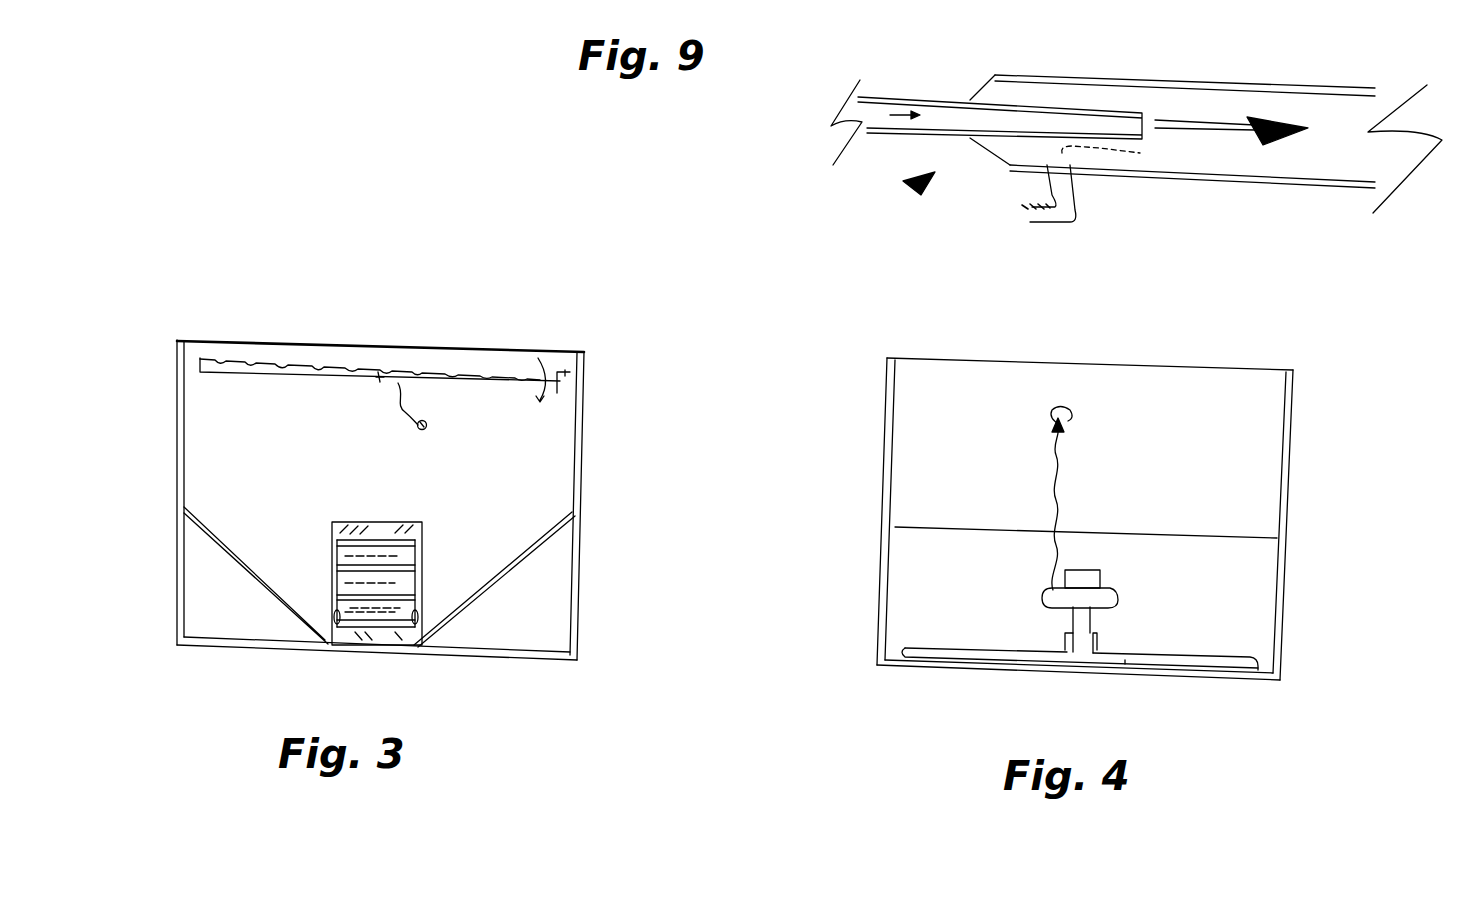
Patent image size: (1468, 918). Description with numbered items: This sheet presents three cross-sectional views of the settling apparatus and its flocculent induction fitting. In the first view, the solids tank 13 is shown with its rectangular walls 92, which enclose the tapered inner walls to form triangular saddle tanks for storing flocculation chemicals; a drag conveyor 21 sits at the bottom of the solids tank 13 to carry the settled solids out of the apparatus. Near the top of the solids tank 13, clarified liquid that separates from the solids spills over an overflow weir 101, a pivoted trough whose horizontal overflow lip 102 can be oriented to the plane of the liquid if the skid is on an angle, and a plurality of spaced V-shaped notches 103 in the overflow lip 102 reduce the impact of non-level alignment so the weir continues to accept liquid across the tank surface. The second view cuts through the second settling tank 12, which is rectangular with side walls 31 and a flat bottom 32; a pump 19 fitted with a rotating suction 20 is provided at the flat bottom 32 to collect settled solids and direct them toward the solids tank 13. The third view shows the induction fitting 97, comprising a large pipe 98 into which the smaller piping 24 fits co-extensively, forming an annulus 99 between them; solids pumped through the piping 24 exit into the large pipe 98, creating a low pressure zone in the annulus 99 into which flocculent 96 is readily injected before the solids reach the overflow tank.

In FIG. 3, the second settling tank 12 is at (582, 578).
In FIG. 3, the solids tank 13 is at (510, 428).
In FIG. 4, the pump 19 is at (1115, 605).
In FIG. 4, the rotating suction 20 is at (1183, 650).
In FIG. 3, the drag conveyor 21 is at (423, 586).
In FIG. 9, the piping 24 is at (910, 97).
In FIG. 3, the side wall 31 is at (584, 454).
In FIG. 4, the side wall 31 is at (1292, 487).
In FIG. 3, the flat bottom 32 is at (527, 643).
In FIG. 4, the flat bottom 32 is at (983, 672).
In FIG. 3, the rectangular walls 92 is at (173, 587).
In FIG. 9, the flocculent 96 is at (1012, 213).
In FIG. 9, the induction fitting 97 is at (900, 190).
In FIG. 9, the large pipe 98 is at (1125, 78).
In FIG. 9, the annulus 99 is at (1047, 97).
In FIG. 3, the overflow weir 101 is at (228, 367).
In FIG. 3, the horizontal overflow lip 102 is at (437, 366).
In FIG. 3, the V-shaped notches 103 is at (347, 372).